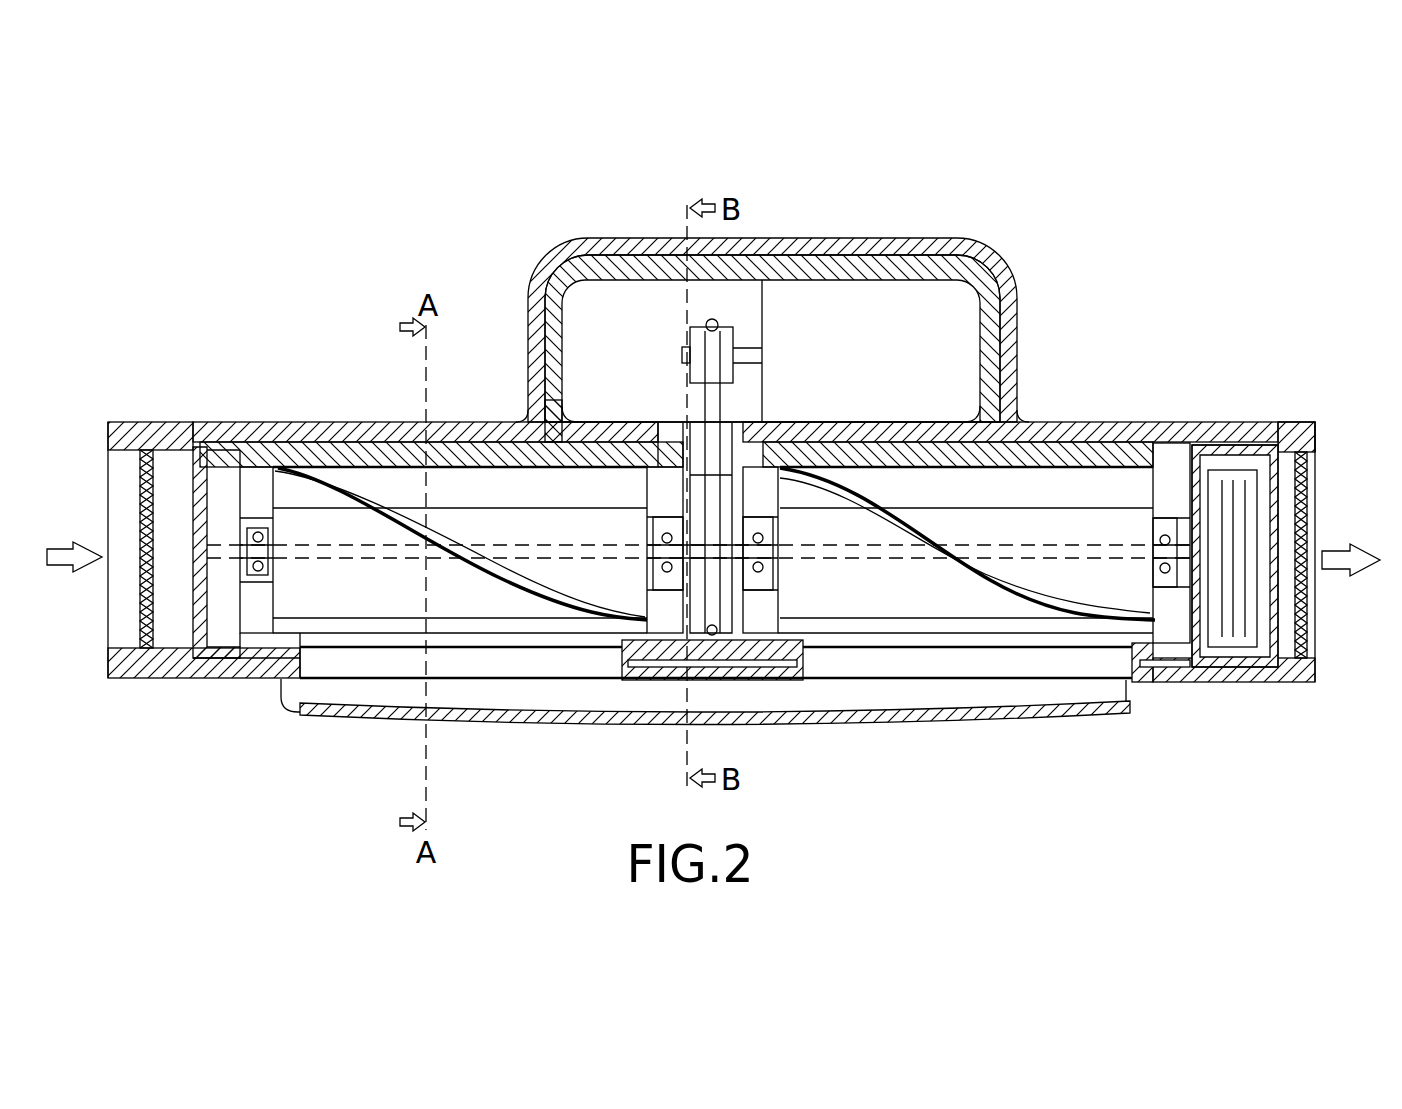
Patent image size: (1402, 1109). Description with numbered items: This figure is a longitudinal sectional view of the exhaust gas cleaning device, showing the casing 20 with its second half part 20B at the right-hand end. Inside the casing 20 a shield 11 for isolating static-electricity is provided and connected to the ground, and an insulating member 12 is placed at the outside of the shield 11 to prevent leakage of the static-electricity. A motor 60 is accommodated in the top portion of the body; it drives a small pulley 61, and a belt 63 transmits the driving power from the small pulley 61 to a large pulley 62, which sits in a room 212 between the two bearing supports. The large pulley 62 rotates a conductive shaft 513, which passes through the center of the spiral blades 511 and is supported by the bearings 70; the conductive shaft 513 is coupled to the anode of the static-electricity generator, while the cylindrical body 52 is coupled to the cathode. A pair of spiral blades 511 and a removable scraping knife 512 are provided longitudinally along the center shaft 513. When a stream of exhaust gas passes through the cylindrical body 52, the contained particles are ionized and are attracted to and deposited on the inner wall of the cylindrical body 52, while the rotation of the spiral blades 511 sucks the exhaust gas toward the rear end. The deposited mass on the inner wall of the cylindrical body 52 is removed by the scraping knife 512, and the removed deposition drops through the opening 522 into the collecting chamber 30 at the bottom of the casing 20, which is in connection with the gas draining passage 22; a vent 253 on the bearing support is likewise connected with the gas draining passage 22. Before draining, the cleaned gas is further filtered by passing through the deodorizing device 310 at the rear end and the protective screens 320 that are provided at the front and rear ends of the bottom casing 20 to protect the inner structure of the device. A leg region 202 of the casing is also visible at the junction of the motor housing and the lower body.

The shield 11 is at (246, 432).
The insulating member 12 is at (363, 425).
The casing 20 is at (1044, 337).
The second half part 20B is at (1296, 410).
The gas draining passage 22 is at (1168, 483).
The collecting chamber 30 is at (573, 702).
The cylindrical body 52 is at (400, 462).
The motor 60 is at (871, 320).
The small pulley 61 is at (688, 337).
The large pulley 62 is at (697, 607).
The belt 63 is at (713, 430).
The bearings 70 is at (263, 543).
The casing leg 202 is at (612, 430).
The room 212 is at (737, 640).
The vent 253 is at (252, 490).
The deodorizing device 310 is at (1223, 627).
The protective screen 320 is at (148, 648).
The spiral blades 511 is at (325, 497).
The scraping knife 512 is at (531, 492).
The conductive shaft 513 is at (255, 590).
The opening 522 is at (375, 645).